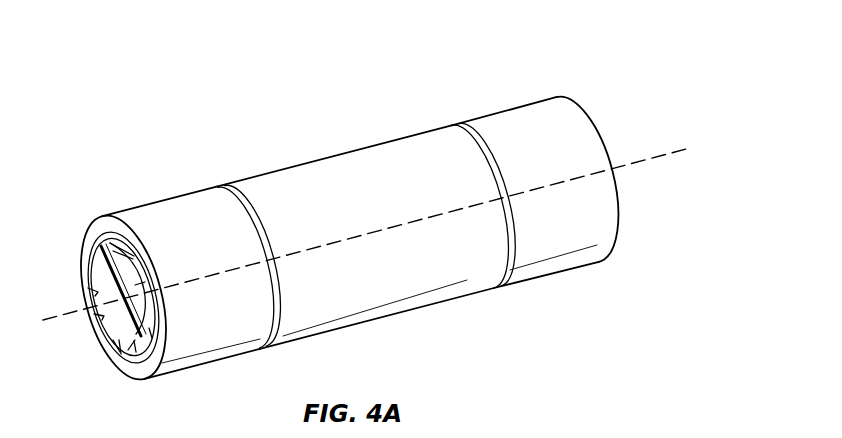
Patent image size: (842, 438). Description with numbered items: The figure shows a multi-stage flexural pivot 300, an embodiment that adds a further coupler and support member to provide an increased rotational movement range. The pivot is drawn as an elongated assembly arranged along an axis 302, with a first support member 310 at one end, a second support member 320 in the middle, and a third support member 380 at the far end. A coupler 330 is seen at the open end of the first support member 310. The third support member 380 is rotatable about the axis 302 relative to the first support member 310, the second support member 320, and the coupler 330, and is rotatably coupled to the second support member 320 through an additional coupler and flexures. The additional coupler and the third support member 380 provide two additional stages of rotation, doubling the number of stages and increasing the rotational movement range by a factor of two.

The multi-stage flexural pivot 300 is at (232, 72).
The axis 302 is at (662, 153).
The first support member 310 is at (168, 215).
The second support member 320 is at (342, 168).
The coupler 330 is at (120, 328).
The third support member 380 is at (518, 115).